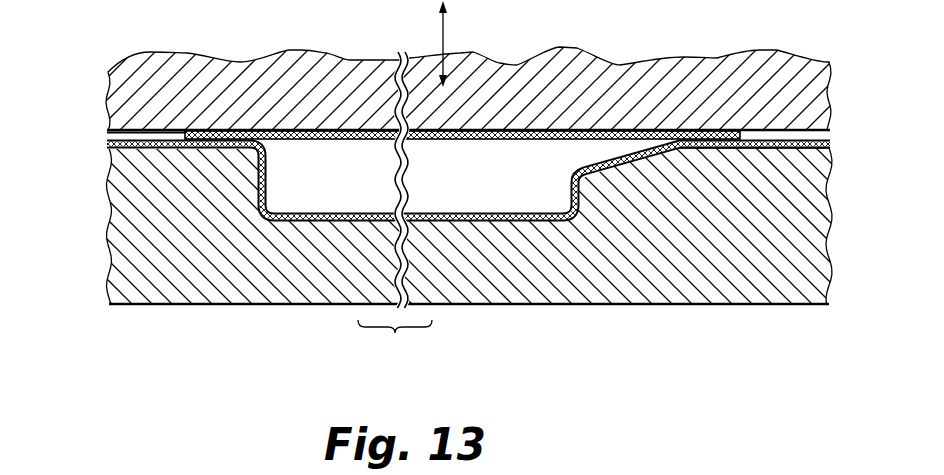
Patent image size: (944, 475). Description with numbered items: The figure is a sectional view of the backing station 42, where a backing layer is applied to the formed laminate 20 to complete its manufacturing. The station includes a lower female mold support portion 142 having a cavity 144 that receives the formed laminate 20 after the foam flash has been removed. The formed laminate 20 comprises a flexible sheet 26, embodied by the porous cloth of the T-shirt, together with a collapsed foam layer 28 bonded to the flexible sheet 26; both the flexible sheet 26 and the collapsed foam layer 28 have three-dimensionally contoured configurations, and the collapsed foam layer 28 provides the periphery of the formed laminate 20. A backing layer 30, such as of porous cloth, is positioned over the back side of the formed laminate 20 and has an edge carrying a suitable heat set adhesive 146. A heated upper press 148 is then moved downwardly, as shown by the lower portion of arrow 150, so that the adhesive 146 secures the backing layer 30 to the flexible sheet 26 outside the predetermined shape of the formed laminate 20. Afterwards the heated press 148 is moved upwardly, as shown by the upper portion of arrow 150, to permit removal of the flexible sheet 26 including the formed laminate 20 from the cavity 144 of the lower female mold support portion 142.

The backing station 42 is at (472, 187).
The heat set adhesive 146 is at (218, 133).
The backing layer 30 is at (351, 143).
The arrow 150 is at (443, 33).
The heated upper press 148 is at (590, 77).
The cavity 144 is at (313, 213).
The formed laminate 20 is at (468, 189).
The collapsed foam layer 28 is at (482, 225).
The flexible sheet 26 is at (530, 226).
The lower female mold support portion 142 is at (678, 262).